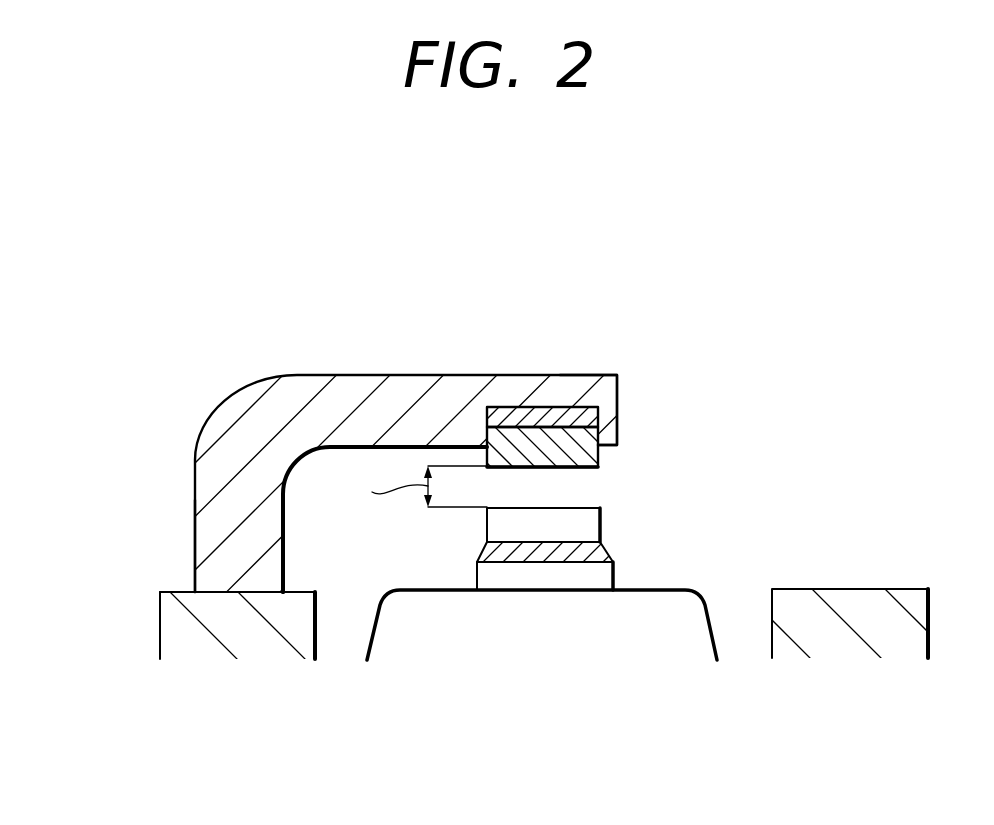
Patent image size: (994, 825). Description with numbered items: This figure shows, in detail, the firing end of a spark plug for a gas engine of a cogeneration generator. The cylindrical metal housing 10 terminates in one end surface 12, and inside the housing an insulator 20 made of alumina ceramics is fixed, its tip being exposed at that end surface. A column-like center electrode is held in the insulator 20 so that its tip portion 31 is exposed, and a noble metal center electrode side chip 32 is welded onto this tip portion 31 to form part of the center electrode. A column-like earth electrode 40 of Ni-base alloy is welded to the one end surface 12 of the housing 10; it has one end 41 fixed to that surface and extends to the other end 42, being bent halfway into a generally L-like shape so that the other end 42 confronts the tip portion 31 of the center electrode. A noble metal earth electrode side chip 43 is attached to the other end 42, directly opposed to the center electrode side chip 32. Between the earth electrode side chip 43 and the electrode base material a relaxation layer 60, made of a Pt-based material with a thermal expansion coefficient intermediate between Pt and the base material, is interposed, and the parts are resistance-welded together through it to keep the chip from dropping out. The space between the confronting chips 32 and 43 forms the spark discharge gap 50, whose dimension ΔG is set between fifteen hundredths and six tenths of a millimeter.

The housing 10 is at (148, 632).
The one end surface of the housing 12 is at (186, 589).
The insulator 20 is at (410, 625).
The tip portion of the center electrode 31 is at (597, 578).
The center electrode side chip 32 is at (585, 525).
The earth electrode 40 is at (300, 390).
The one end of the earth electrode 41 is at (227, 570).
The other end of the earth electrode 42 is at (623, 397).
The earth electrode side chip 43 is at (590, 457).
The spark discharge gap 50 is at (570, 488).
The relaxation layer 60 is at (515, 415).